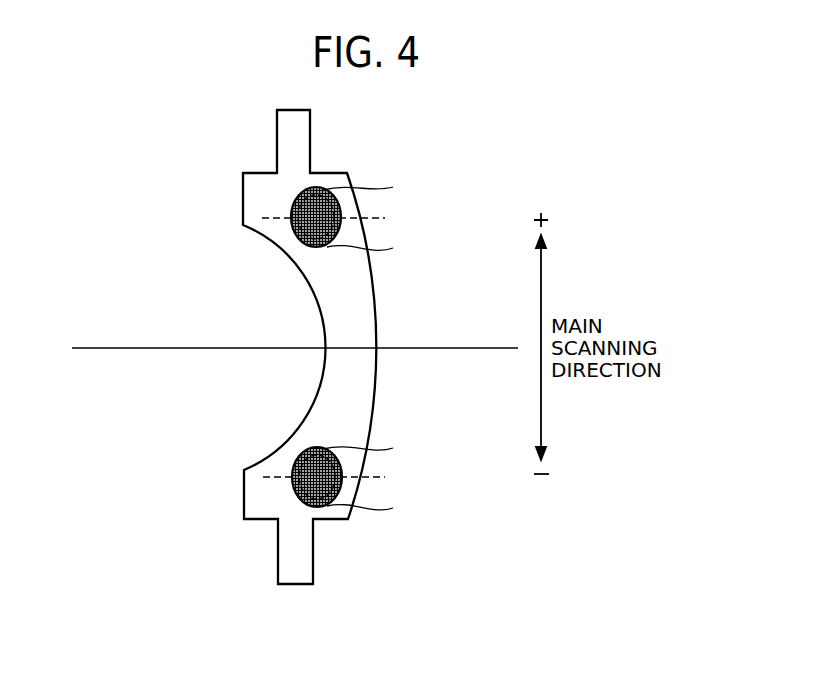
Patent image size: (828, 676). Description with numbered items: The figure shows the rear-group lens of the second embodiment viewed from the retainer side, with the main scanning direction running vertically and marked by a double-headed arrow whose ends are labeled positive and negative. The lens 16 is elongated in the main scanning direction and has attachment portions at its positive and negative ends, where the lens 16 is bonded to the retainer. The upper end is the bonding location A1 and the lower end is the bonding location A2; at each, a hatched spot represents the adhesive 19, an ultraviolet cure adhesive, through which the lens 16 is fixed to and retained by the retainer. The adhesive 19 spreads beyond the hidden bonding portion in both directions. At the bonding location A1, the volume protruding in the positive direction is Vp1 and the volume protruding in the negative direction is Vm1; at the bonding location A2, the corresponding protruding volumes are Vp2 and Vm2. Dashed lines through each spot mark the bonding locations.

The lens 16 is at (372, 327).
The adhesive 19 is at (330, 207).
The bonding location A1 is at (284, 200).
The bonding location A2 is at (284, 493).
The volume of adhesive protruding in the positive direction Vp1 is at (375, 187).
The volume of adhesive protruding in the negative direction Vm1 is at (380, 250).
The volume of adhesive protruding in the positive direction Vp2 is at (375, 447).
The volume of adhesive protruding in the negative direction Vm2 is at (380, 510).